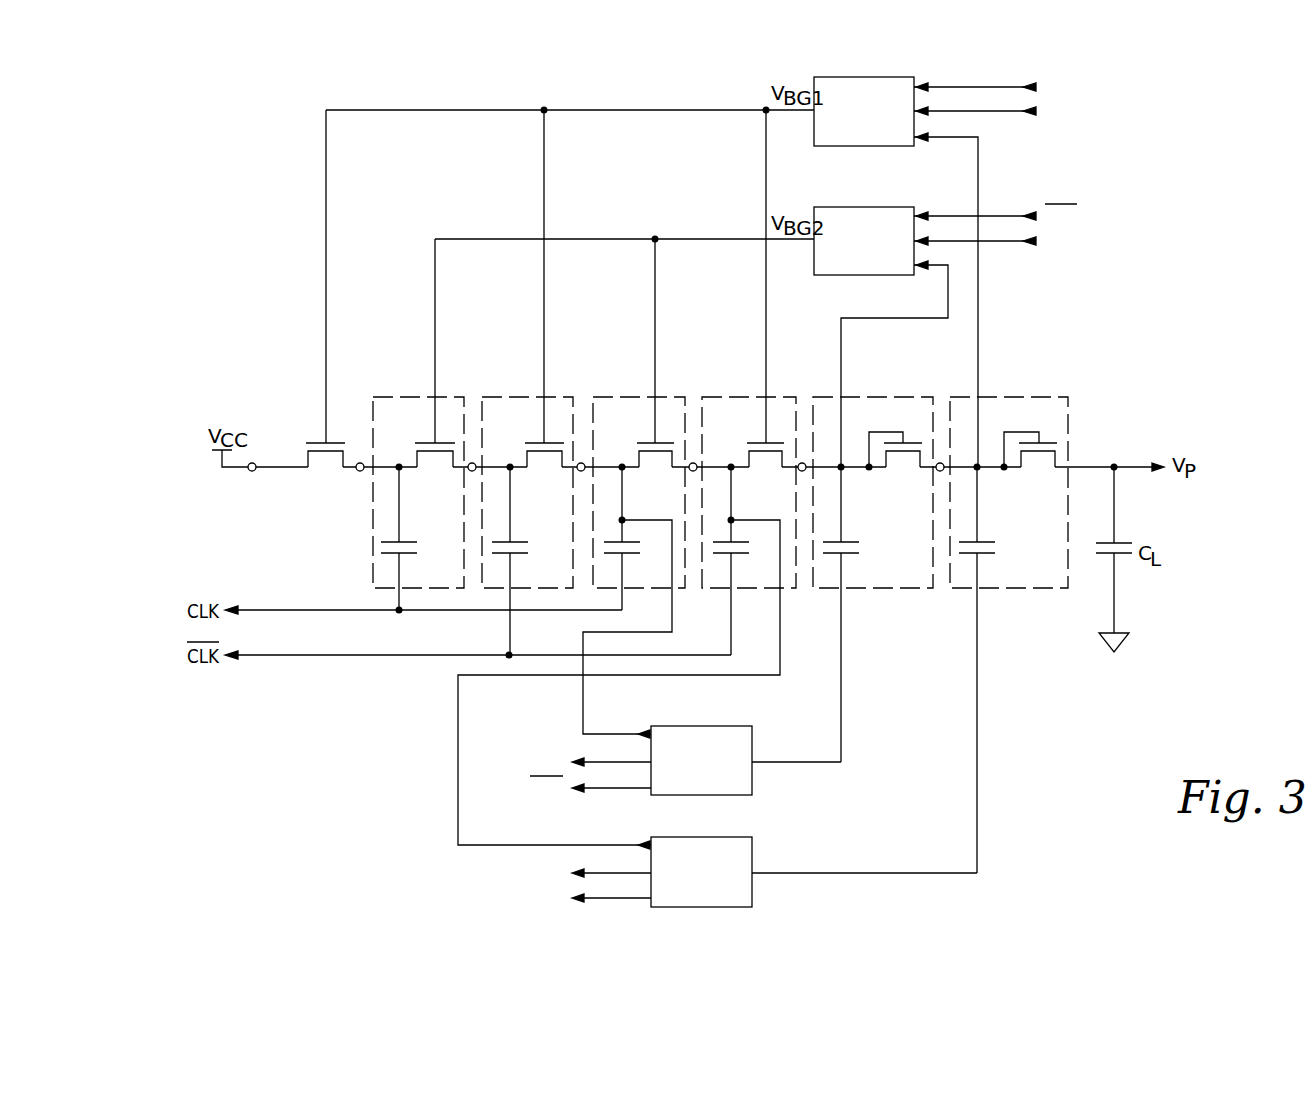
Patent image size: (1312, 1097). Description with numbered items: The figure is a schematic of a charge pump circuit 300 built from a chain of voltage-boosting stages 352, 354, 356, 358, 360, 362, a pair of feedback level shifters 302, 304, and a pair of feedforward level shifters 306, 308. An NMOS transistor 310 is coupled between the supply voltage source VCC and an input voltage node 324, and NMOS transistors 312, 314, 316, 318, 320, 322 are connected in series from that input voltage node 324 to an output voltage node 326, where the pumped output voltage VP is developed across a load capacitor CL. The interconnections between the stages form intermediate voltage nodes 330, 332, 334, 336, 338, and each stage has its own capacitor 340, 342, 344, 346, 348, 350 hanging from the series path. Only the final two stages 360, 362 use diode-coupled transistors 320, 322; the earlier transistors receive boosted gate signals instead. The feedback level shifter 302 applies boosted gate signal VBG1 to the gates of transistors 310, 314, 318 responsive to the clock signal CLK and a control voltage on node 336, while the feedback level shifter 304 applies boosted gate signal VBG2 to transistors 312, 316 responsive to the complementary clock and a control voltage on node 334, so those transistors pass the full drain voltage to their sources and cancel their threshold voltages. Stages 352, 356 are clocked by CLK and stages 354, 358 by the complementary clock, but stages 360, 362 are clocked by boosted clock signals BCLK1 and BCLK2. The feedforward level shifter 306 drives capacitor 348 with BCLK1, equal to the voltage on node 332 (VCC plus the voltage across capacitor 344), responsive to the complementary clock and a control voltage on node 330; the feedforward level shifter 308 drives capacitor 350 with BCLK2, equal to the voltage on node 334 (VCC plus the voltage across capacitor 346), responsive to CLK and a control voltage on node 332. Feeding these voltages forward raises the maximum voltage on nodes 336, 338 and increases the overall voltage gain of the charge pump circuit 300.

The charge pump circuit 300 is at (270, 90).
The feedback level shifter 302 is at (900, 77).
The feedback level shifter 304 is at (888, 207).
The feedforward level shifter 306 is at (745, 726).
The feedforward level shifter 308 is at (745, 837).
The NMOS transistor 310 is at (306, 450).
The NMOS transistor 312 is at (416, 450).
The NMOS transistor 314 is at (525, 450).
The NMOS transistor 316 is at (637, 450).
The NMOS transistor 318 is at (749, 450).
The diode-coupled transistor 320 is at (921, 448).
The diode-coupled transistor 322 is at (1055, 448).
The input voltage node 324 is at (357, 472).
The output voltage node 326 is at (1115, 463).
The intermediate voltage node 330 is at (472, 463).
The intermediate voltage node 332 is at (581, 463).
The intermediate voltage node 334 is at (693, 463).
The intermediate voltage node 336 is at (802, 463).
The intermediate voltage node 338 is at (940, 463).
The capacitor 340 is at (408, 541).
The capacitor 342 is at (518, 541).
The capacitor 344 is at (630, 555).
The capacitor 346 is at (739, 555).
The capacitor 348 is at (848, 542).
The capacitor 350 is at (986, 542).
The voltage-boosting stage 352 is at (400, 397).
The voltage-boosting stage 354 is at (571, 397).
The voltage-boosting stage 356 is at (632, 397).
The voltage-boosting stage 358 is at (785, 397).
The voltage-boosting stage 360 is at (896, 397).
The voltage-boosting stage 362 is at (1066, 397).